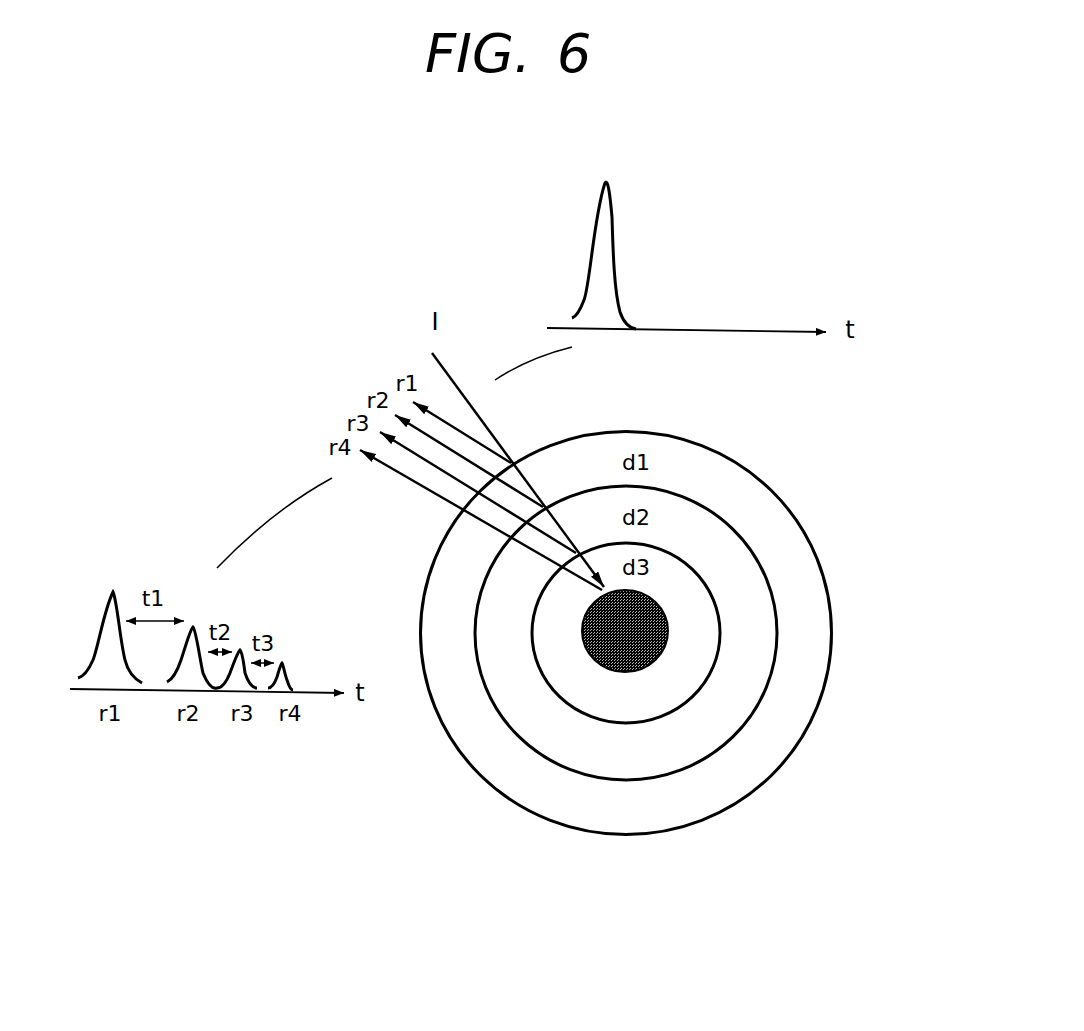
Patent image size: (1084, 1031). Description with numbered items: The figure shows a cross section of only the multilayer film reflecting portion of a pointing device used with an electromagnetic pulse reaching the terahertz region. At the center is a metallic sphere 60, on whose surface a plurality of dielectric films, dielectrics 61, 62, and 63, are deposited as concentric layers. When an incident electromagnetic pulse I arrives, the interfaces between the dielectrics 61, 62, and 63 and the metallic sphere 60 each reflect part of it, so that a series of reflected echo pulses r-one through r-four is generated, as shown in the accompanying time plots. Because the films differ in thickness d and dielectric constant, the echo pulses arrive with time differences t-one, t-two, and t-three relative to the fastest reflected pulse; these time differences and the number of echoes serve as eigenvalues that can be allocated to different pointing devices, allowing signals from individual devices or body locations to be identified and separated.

The metallic sphere 60 is at (632, 657).
The dielectric 61 is at (688, 673).
The dielectric 62 is at (750, 668).
The dielectric 63 is at (815, 619).